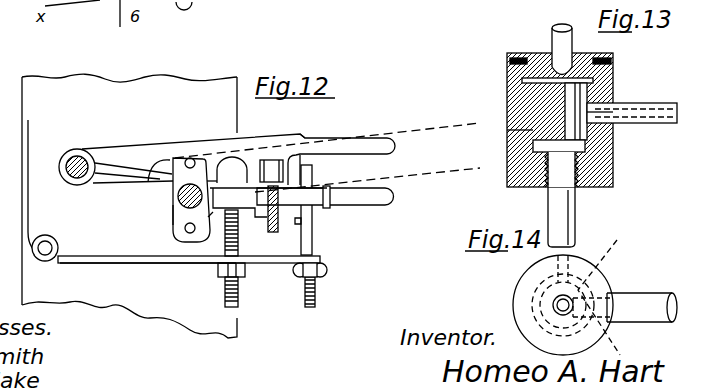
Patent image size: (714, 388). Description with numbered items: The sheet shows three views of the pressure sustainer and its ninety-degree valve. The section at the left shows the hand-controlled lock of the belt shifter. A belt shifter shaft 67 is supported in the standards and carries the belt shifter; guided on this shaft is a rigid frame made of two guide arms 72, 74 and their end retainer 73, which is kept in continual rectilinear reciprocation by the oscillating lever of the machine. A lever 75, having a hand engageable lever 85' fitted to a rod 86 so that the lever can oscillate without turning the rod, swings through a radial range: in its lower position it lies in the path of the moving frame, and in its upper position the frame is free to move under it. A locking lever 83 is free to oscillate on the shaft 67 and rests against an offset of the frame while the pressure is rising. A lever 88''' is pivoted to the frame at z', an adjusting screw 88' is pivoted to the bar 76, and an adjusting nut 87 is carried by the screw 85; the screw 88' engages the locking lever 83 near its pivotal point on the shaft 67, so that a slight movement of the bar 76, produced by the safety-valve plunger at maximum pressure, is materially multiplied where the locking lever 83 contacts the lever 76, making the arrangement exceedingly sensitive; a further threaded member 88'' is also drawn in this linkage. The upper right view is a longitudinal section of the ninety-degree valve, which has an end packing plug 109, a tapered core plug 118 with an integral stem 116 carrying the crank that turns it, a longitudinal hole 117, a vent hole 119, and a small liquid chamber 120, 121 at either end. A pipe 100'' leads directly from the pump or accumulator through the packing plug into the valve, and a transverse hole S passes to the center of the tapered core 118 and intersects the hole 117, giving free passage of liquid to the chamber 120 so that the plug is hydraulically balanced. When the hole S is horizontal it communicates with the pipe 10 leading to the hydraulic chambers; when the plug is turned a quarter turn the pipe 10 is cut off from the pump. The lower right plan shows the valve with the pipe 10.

In FIG. 12, the lever 75 is at (128, 148).
In FIG. 12, the guide arm 72 is at (192, 158).
In FIG. 12, the belt shifter shaft 67 is at (178, 197).
In FIG. 12, the end retainer 73 is at (173, 213).
In FIG. 12, the guide arm 74 is at (185, 230).
In FIG. 12, the locking lever 83 is at (228, 188).
In FIG. 12, the screw 85 is at (331, 236).
In FIG. 12, the hand engageable lever 85' is at (341, 141).
In FIG. 12, the arm 76 is at (313, 209).
In FIG. 12, the rod 86 is at (322, 259).
In FIG. 12, the adjusting nut 87 is at (327, 272).
In FIG. 12, the adjusting screw 88' is at (250, 233).
In FIG. 12, the nut and bolt 88'' is at (253, 285).
In FIG. 12, the lever 88''' is at (148, 279).
In FIG. 12, the pivot z' is at (45, 264).
In FIG. 13, the integral stem 116 is at (556, 60).
In FIG. 13, the end packing plug 109 is at (587, 60).
In FIG. 13, the liquid chamber 120 is at (613, 88).
In FIG. 13, the hole S is at (576, 88).
In FIG. 13, the pipe 10 is at (628, 112).
In FIG. 14, the pipe 10 is at (632, 295).
In FIG. 13, the hole 117 is at (617, 128).
In FIG. 13, the tapered core plug 118 is at (530, 105).
In FIG. 13, the vent hole 119 is at (530, 132).
In FIG. 13, the liquid chamber 121 is at (590, 150).
In FIG. 13, the pipe 100'' is at (592, 199).